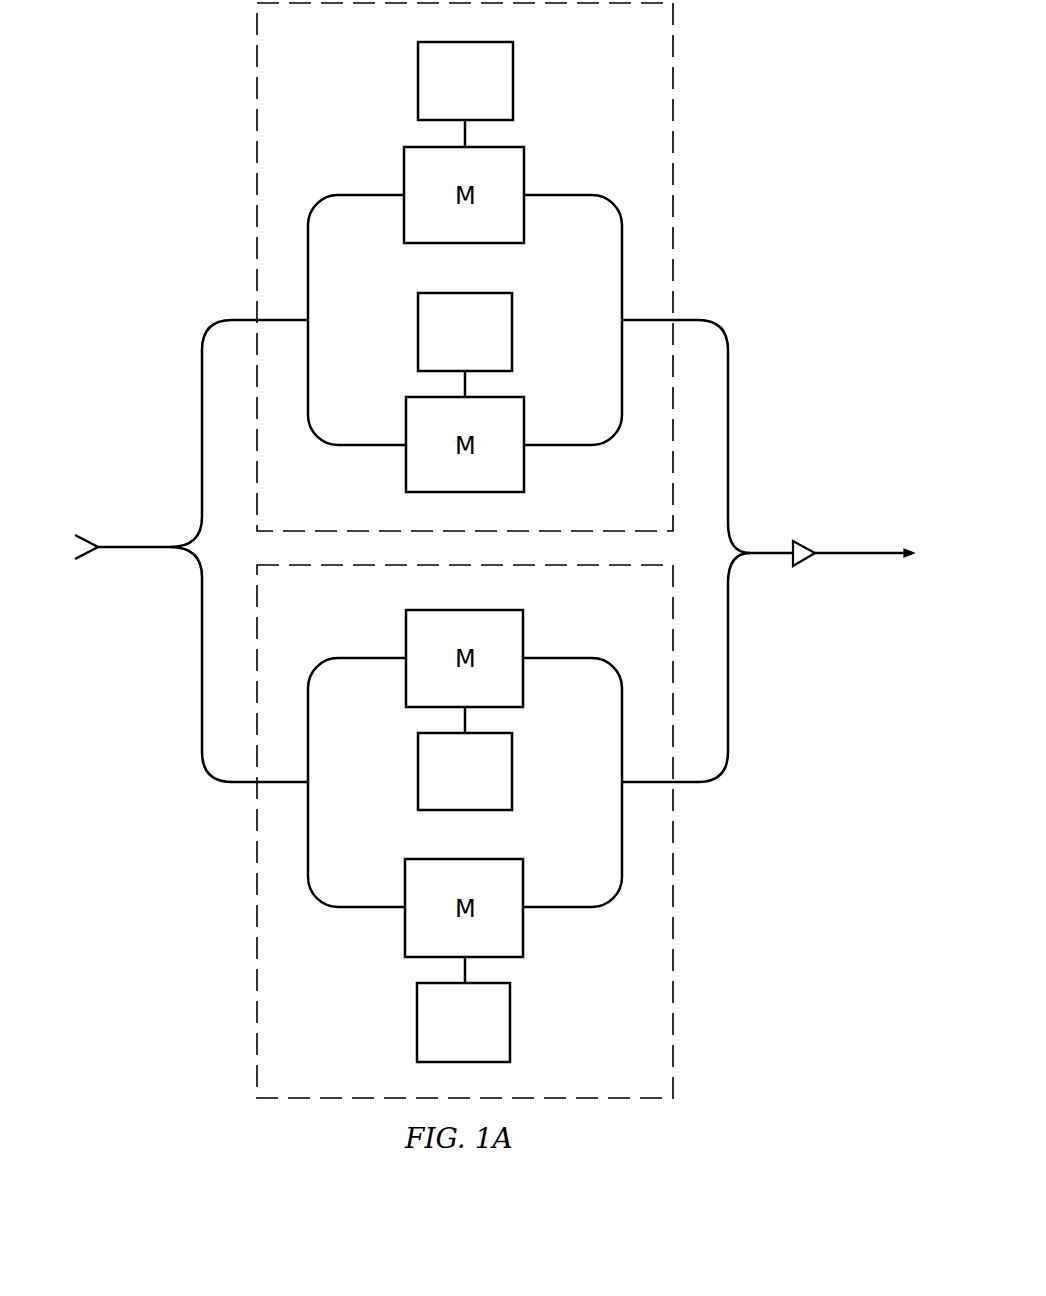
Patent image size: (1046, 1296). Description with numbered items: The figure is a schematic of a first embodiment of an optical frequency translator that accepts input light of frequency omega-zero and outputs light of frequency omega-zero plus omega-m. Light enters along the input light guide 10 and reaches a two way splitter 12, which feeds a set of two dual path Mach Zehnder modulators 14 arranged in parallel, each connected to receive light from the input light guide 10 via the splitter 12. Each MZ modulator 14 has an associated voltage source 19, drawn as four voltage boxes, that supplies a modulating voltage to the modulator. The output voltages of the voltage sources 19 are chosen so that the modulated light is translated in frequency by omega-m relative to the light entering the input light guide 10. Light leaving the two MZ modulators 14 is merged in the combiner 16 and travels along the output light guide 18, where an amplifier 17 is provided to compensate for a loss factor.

The input light guide 10 is at (124, 549).
The two way splitter 12 is at (170, 547).
The dual path Mach Zehnder modulator 14 is at (675, 143).
The combiner 16 is at (750, 553).
The amplifier 17 is at (804, 565).
The output light guide 18 is at (838, 553).
The voltage source 19 is at (418, 86).